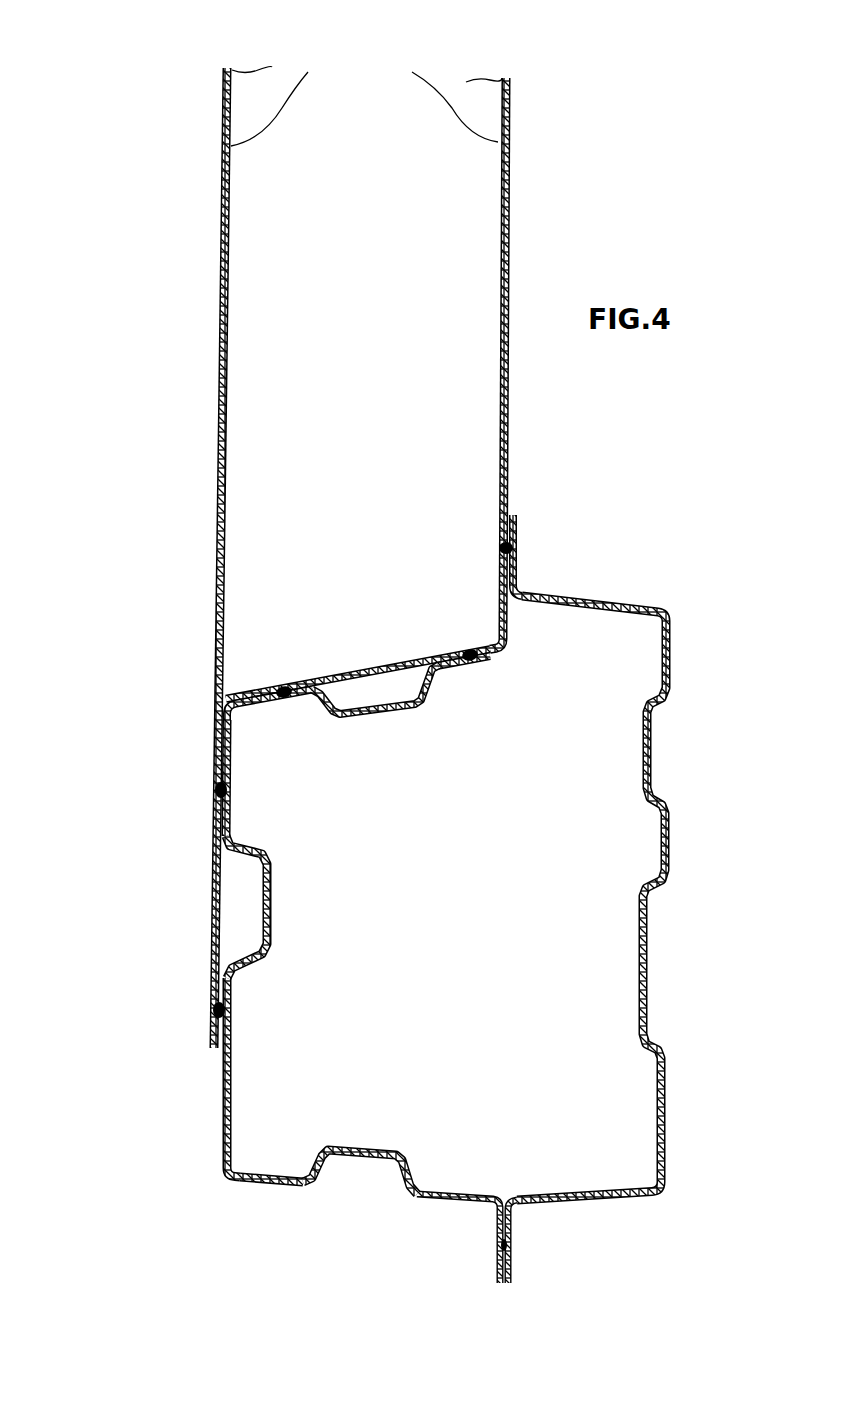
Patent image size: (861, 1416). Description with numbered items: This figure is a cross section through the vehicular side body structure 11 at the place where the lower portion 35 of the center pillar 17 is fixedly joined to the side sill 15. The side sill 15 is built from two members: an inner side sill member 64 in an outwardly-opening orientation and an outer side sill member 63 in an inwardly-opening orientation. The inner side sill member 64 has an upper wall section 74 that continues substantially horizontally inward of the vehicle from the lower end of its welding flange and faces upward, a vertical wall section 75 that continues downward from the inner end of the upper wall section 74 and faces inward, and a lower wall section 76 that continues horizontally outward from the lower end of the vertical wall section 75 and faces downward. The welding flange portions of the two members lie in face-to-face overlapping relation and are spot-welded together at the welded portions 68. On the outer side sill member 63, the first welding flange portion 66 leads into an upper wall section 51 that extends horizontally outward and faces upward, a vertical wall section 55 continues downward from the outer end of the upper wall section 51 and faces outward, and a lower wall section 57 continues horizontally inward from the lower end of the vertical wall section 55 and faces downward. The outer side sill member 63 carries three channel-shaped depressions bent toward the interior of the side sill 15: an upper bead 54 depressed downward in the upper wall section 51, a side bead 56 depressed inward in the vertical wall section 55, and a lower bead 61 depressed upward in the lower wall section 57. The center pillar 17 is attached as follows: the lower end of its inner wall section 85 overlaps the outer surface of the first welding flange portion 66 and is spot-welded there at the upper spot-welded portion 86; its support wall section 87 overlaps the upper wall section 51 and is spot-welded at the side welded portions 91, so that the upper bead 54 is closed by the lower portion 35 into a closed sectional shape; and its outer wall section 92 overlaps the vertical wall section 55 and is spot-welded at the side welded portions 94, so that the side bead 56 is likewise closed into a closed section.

The vehicular side body structure 11 is at (150, 120).
The center pillar 17 is at (409, 51).
The outer wall section 92 is at (281, 248).
The inner wall section 85 is at (439, 338).
The lower portion 35 is at (216, 584).
The upper spot-welded portion 86 is at (497, 546).
The welded portions 68 is at (519, 552).
The upper wall section 74 is at (597, 598).
The side sill 15 is at (674, 540).
The inner side sill member 64 is at (680, 610).
The side welded portions 91 is at (288, 686).
The support wall section 87 is at (422, 648).
The first welding flange portion 66 is at (512, 628).
The upper wall section 51 is at (270, 706).
The upper bead 54 is at (355, 720).
The side welded portions 94 is at (216, 792).
The side bead 56 is at (273, 900).
The vertical wall section 75 is at (672, 826).
The vertical wall section 55 is at (222, 1098).
The lower bead 61 is at (346, 1148).
The outer side sill member 63 is at (224, 1179).
The lower wall section 57 is at (266, 1186).
The lower wall section 76 is at (590, 1196).